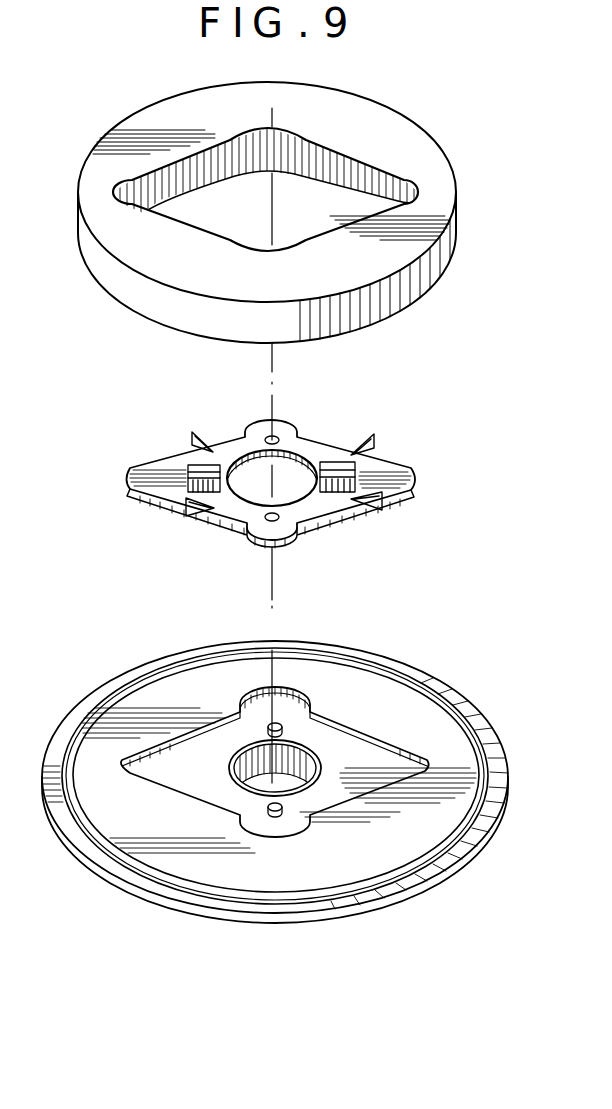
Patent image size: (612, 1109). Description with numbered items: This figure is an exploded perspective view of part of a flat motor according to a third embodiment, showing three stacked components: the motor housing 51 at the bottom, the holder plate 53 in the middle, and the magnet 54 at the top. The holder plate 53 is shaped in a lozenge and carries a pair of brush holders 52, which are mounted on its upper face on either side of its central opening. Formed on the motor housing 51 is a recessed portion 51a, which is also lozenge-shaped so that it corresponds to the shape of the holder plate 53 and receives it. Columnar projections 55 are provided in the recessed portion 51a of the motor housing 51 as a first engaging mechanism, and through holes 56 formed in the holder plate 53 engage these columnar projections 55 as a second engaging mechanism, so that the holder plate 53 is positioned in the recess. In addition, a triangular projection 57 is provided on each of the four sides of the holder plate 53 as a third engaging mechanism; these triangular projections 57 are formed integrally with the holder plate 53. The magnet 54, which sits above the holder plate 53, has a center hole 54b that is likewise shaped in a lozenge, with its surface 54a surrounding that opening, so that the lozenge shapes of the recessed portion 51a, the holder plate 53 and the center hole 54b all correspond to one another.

The motor housing 51 is at (475, 725).
The recessed portion 51a is at (343, 745).
The brush holders 52 is at (198, 468).
The holder plate 53 is at (403, 474).
The magnet 54 is at (438, 203).
The top surface of ring 54a is at (342, 168).
The center hole 54b is at (357, 213).
The columnar projections 55 is at (278, 723).
The through holes 56 is at (275, 438).
The triangular projection 57 is at (199, 438).